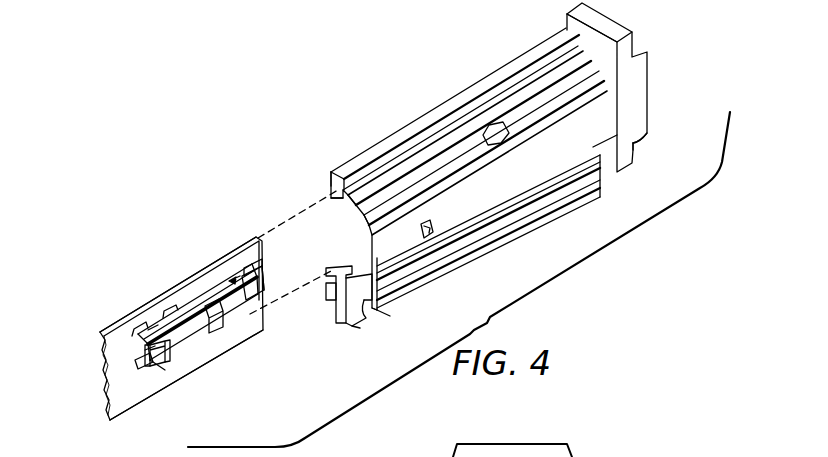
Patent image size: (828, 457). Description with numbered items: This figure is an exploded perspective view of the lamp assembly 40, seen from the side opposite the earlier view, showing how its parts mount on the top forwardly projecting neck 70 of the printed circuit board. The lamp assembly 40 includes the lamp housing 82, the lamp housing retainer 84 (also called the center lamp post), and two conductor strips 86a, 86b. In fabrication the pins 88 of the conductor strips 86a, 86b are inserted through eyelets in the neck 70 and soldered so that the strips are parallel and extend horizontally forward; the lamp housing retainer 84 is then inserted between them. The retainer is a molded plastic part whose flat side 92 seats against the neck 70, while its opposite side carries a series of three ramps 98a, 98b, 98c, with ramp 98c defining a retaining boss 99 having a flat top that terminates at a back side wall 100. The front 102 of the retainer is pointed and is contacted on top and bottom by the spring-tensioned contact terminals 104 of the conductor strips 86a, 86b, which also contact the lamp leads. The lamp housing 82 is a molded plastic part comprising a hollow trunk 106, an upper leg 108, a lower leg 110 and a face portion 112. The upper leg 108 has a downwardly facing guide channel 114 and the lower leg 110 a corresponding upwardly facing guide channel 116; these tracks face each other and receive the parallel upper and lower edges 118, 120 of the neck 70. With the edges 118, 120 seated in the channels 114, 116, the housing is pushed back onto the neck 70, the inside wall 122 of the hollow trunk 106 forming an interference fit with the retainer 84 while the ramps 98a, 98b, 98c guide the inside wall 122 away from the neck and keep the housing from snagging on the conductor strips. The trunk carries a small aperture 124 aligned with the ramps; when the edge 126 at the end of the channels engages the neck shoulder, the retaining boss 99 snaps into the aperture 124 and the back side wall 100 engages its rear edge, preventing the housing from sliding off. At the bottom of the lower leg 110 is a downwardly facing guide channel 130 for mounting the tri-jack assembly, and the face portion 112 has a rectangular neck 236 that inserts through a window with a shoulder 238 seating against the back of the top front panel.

The lamp assembly 40 is at (493, 171).
The neck 70 is at (181, 324).
The lamp housing 82 is at (446, 185).
The lamp housing retainer 84 is at (189, 324).
The conductor strip 86a is at (157, 327).
The conductor strip 86b is at (155, 368).
The pins 88 is at (170, 305).
The flat side 92 is at (147, 353).
The ramp 98a is at (266, 294).
The ramp 98b is at (216, 325).
The ramp 98c is at (178, 353).
The retaining boss 99 is at (167, 355).
The back side wall 100 is at (142, 365).
The front 102 is at (265, 280).
The contact terminals 104 is at (243, 266).
The hollow trunk 106 is at (362, 238).
The upper leg 108 is at (328, 216).
The lower leg 110 is at (340, 297).
The face portion 112 is at (638, 86).
The guide channel 114 is at (330, 196).
The guide channel 116 is at (330, 318).
The upper edge 118 is at (223, 253).
The lower edge 120 is at (140, 407).
The inside wall 122 is at (384, 318).
The aperture 124 is at (434, 228).
The edge 126 is at (330, 176).
The guide channel 130 is at (350, 326).
The rectangular neck 236 is at (641, 134).
The shoulder 238 is at (638, 150).